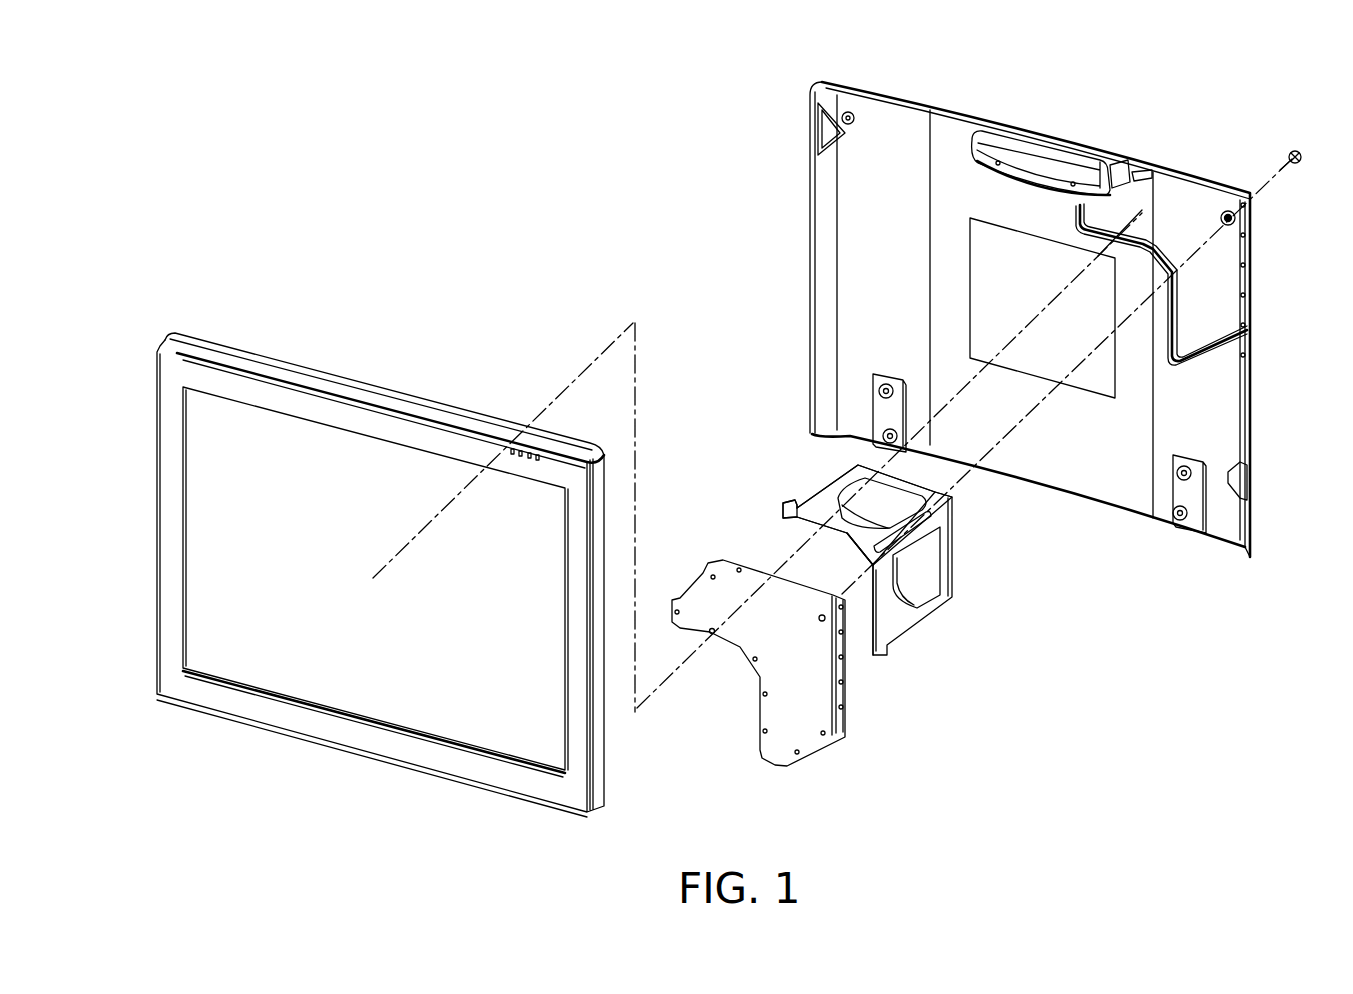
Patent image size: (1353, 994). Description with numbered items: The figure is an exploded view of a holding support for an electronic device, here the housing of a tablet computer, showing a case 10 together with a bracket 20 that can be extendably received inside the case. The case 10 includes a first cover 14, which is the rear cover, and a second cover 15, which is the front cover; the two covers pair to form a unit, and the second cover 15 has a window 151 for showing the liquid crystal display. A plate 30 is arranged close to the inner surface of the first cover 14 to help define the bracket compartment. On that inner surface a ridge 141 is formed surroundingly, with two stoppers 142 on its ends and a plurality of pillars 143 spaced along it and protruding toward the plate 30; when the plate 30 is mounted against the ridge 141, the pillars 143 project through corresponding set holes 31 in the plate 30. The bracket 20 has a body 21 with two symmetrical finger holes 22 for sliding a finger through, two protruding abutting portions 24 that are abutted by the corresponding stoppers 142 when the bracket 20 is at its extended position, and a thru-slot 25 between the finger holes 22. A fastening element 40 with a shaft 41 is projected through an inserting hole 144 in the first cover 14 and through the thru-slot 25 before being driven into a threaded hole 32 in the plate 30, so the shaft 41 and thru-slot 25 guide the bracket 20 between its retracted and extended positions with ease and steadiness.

The case 10 is at (804, 130).
The first cover 14 is at (808, 213).
The second cover 15 is at (326, 362).
The window 151 is at (292, 694).
The ridge 141 is at (1175, 315).
The stopper 142 is at (1133, 150).
The pillar 143 is at (1058, 262).
The inserting hole 144 is at (1226, 212).
The fastening element 40 is at (1283, 150).
The shaft 41 is at (1295, 168).
The bracket 20 is at (958, 604).
The body 21 is at (900, 620).
The finger hole 22 is at (935, 565).
The abutting portion 24 is at (782, 512).
The thru-slot 25 is at (835, 505).
The plate 30 is at (825, 750).
The set hole 31 is at (712, 632).
The threaded hole 32 is at (823, 622).